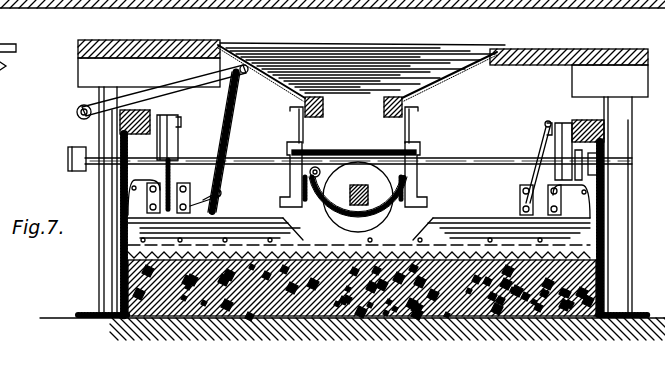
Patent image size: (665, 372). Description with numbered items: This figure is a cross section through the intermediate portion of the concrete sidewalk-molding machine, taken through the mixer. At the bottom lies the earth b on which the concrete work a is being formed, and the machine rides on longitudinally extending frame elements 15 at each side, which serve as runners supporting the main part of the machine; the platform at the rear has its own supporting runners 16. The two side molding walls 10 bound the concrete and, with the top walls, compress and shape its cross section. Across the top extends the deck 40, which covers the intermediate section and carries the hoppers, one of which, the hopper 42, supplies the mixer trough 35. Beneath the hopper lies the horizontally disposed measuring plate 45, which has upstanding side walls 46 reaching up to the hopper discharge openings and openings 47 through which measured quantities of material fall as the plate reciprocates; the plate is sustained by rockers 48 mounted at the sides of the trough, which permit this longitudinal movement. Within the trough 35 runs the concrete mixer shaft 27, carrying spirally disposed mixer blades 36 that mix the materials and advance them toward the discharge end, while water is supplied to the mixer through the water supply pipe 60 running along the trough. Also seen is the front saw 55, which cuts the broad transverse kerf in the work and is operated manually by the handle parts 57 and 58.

The side molding walls 10 is at (100, 331).
The longitudinally extending frame elements 15 is at (86, 311).
The supporting runners 16 is at (397, 0).
The concrete mixer shaft 27 is at (384, 172).
The mixer trough 35 is at (444, 212).
The mixer blades 36 is at (358, 201).
The deck 40 is at (172, 39).
The hopper 42 is at (357, 81).
The measuring plate 45 is at (426, 154).
The side walls 46 is at (296, 128).
The openings 47 is at (372, 150).
The rockers 48 is at (284, 180).
The front saw 55 is at (276, 228).
The handle part 57 is at (76, 114).
The handle part 58 is at (68, 168).
The water supply pipe 60 is at (319, 167).
The concrete sidewalk a is at (545, 251).
The earth b is at (82, 0).